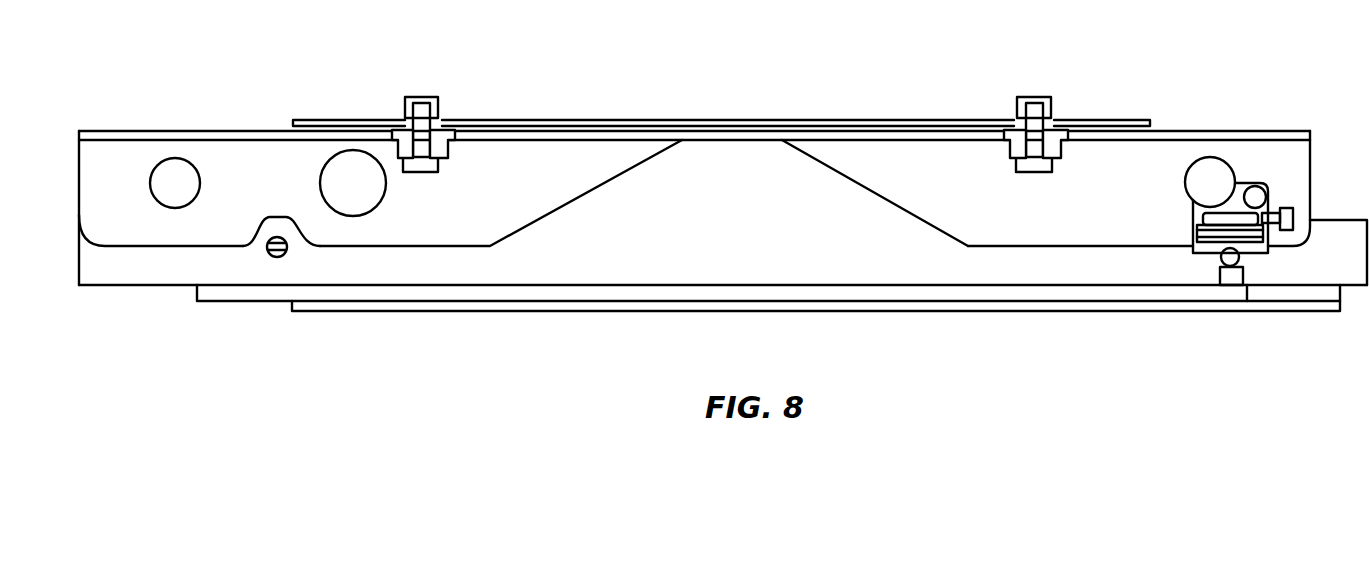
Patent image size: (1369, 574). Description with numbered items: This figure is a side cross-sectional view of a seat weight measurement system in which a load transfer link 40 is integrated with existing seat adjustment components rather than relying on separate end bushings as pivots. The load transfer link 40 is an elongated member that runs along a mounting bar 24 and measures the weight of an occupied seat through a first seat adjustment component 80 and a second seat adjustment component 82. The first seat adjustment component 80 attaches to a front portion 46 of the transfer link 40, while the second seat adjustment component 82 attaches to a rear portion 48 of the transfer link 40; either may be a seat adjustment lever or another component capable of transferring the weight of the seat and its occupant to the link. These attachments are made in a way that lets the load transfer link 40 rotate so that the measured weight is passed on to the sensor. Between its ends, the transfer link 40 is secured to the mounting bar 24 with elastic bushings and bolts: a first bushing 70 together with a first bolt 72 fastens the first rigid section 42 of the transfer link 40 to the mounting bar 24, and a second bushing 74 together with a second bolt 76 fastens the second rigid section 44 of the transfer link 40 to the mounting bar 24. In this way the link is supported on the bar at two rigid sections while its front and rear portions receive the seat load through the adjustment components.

The mounting bar 24 is at (785, 268).
The load transfer link 40 is at (912, 198).
The first rigid section 42 is at (334, 252).
The second rigid section 44 is at (1121, 254).
The front portion 46 is at (88, 177).
The rear portion 48 is at (1297, 172).
The first bushing 70 is at (437, 138).
The first bolt 72 is at (423, 128).
The second bushing 74 is at (1022, 138).
The second bolt 76 is at (1035, 128).
The first seat adjustment component 80 is at (173, 167).
The second seat adjustment component 82 is at (1210, 163).